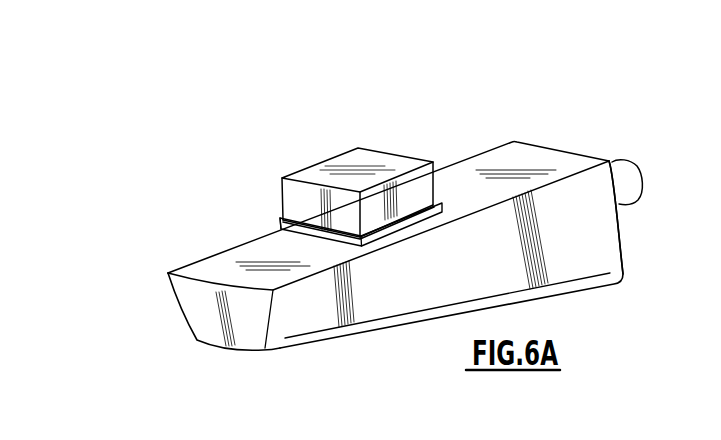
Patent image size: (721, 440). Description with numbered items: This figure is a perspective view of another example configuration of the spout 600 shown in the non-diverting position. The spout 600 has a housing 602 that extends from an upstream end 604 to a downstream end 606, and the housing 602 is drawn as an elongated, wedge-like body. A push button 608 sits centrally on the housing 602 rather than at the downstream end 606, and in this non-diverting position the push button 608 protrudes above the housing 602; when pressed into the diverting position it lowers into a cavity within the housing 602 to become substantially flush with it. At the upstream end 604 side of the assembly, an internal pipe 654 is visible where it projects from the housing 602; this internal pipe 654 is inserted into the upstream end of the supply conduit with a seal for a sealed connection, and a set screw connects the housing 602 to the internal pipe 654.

The spout 600 is at (172, 179).
The housing 602 is at (465, 170).
The upstream end 604 is at (168, 273).
The downstream end 606 is at (563, 150).
The push button 608 is at (340, 168).
The internal pipe 654 is at (643, 173).